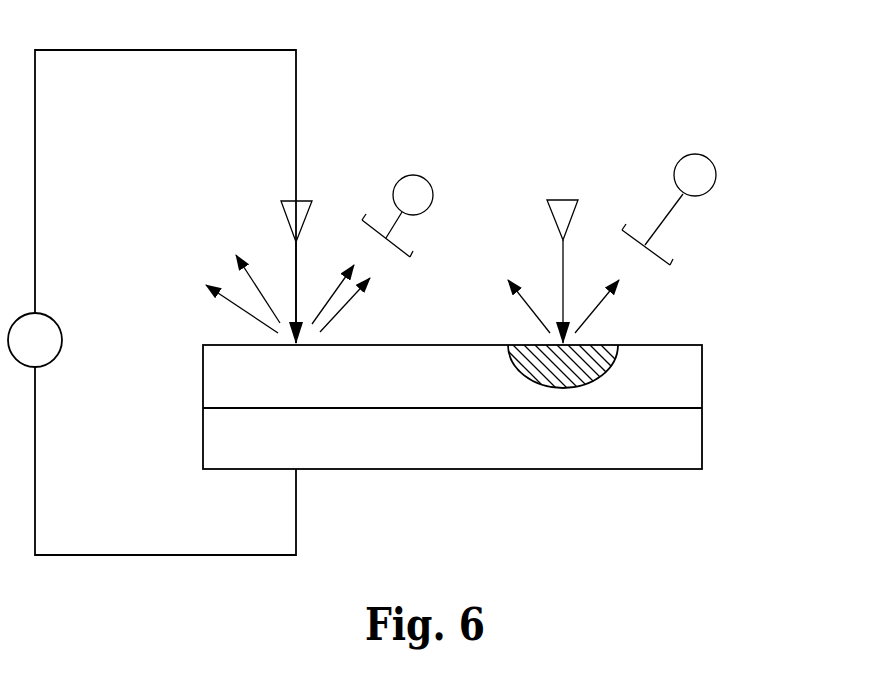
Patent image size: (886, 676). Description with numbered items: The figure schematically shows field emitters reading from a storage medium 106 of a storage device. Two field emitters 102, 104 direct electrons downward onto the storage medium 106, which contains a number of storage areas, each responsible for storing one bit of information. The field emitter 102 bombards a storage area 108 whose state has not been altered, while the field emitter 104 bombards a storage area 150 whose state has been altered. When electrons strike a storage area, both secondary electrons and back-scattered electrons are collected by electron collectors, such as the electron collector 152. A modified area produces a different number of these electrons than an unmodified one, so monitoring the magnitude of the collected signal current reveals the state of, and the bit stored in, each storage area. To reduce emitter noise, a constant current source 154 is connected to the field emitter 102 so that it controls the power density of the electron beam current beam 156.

The field emitter 102 is at (300, 207).
The field emitter 104 is at (565, 207).
The storage medium 106 is at (718, 397).
The storage area 108 is at (330, 340).
The storage area 150 is at (598, 340).
The electron collector 152 is at (705, 165).
The constant current source 154 is at (52, 322).
The electron beam current beam 156 is at (296, 265).